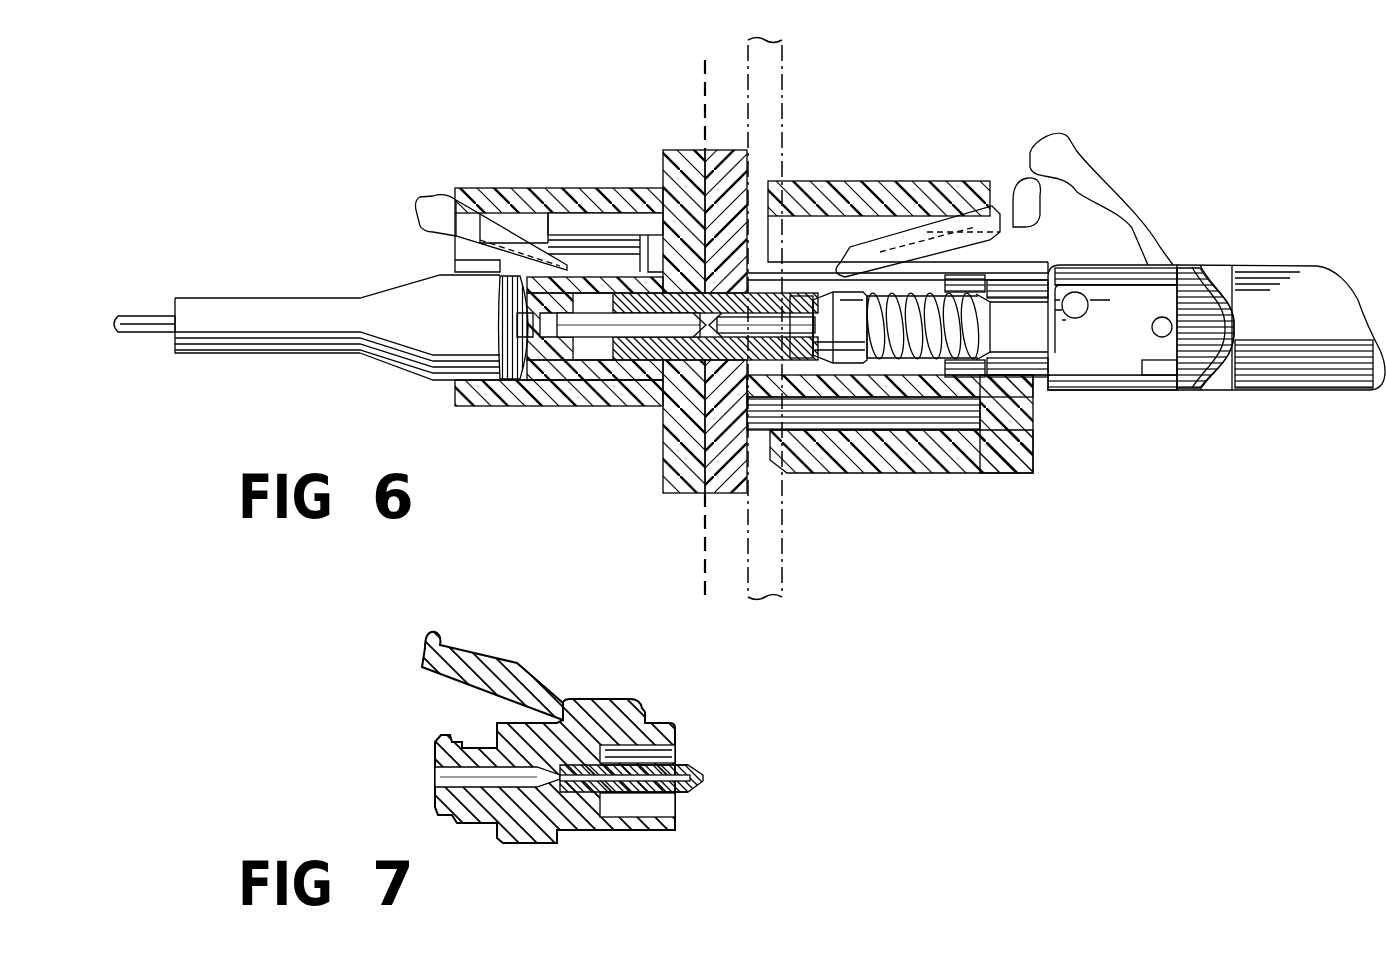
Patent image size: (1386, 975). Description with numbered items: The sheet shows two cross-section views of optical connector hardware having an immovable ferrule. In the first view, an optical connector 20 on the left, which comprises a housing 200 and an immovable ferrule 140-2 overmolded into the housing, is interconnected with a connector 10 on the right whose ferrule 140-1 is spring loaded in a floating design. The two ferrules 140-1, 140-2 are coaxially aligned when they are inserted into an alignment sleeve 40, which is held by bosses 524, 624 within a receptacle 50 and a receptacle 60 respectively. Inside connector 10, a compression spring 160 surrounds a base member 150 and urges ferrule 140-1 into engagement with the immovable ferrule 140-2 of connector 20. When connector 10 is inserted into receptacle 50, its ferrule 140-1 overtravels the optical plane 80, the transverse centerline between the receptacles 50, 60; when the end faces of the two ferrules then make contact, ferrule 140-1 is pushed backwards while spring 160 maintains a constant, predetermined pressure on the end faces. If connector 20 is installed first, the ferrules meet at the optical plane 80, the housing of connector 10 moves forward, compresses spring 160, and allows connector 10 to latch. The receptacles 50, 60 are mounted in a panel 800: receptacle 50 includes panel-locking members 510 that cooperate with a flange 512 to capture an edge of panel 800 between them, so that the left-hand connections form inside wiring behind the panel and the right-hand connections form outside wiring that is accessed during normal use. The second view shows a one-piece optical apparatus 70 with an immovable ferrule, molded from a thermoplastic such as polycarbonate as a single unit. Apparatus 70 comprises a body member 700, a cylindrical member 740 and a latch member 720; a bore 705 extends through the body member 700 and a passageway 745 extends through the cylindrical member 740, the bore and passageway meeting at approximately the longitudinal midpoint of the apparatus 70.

In FIG. 6, the connector 10 is at (1207, 248).
In FIG. 6, the optical connector 20 is at (383, 270).
In FIG. 6, the alignment sleeve 40 is at (636, 378).
In FIG. 6, the receptacle 50 is at (1003, 469).
In FIG. 6, the receptacle 60 is at (667, 496).
In FIG. 7, the apparatus 70 is at (576, 684).
In FIG. 6, the optical plane 80 is at (703, 100).
In FIG. 6, the ferrule 140-1 is at (780, 355).
In FIG. 6, the ferrule 140-2 is at (576, 378).
In FIG. 6, the base member 150 is at (850, 347).
In FIG. 6, the compression spring 160 is at (985, 320).
In FIG. 6, the housing 200 is at (528, 372).
In FIG. 6, the panel-locking members 510 is at (846, 187).
In FIG. 6, the flange 512 is at (727, 160).
In FIG. 6, the boss 524 is at (783, 297).
In FIG. 6, the boss 624 is at (630, 272).
In FIG. 7, the body member 700 is at (570, 827).
In FIG. 7, the bore 705 is at (443, 783).
In FIG. 7, the latch member 720 is at (432, 652).
In FIG. 7, the cylindrical member 740 is at (678, 757).
In FIG. 7, the passageway 745 is at (693, 790).
In FIG. 6, the panel 800 is at (770, 58).